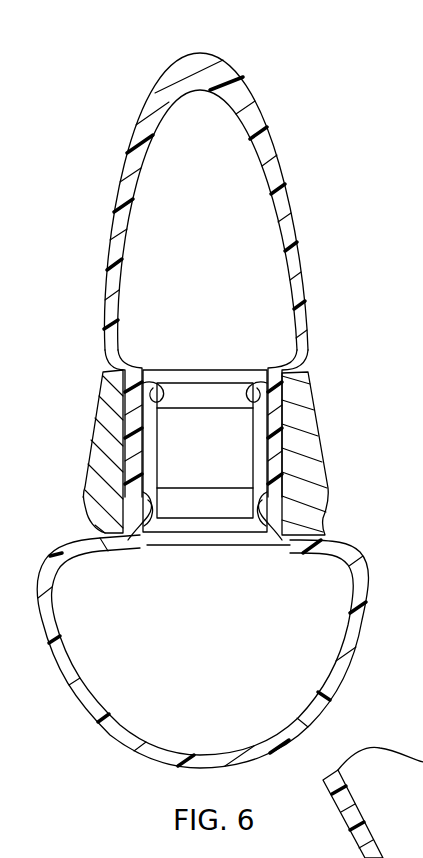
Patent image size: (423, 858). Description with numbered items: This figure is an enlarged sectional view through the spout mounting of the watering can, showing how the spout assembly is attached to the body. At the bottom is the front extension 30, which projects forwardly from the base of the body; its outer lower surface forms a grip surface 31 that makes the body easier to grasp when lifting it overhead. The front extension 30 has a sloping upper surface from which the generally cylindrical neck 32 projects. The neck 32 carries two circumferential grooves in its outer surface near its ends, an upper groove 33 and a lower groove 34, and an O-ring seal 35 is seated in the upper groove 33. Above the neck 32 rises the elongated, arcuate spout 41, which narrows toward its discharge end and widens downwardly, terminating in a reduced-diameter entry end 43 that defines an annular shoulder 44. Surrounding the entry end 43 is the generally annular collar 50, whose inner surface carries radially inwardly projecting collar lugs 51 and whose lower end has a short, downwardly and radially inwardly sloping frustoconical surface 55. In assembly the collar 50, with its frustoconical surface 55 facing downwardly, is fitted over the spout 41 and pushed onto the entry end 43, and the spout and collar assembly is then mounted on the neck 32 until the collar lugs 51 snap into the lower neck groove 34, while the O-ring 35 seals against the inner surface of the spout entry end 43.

The front extension 30 is at (218, 651).
The grip surface 31 is at (347, 683).
The neck 32 is at (210, 382).
The upper circumferential groove 33 is at (158, 383).
The lower circumferential groove 34 is at (282, 540).
The O-ring seal 35 is at (250, 380).
The spout 41 is at (288, 202).
The reduced-diameter entry end 43 is at (275, 420).
The annular shoulder 44 is at (297, 368).
The collar 50 is at (93, 414).
The collar lugs 51 is at (163, 533).
The frustoconical surface 55 is at (98, 527).